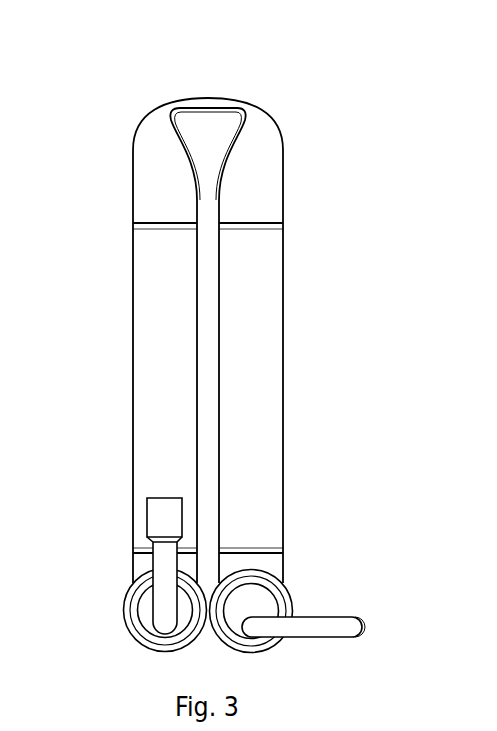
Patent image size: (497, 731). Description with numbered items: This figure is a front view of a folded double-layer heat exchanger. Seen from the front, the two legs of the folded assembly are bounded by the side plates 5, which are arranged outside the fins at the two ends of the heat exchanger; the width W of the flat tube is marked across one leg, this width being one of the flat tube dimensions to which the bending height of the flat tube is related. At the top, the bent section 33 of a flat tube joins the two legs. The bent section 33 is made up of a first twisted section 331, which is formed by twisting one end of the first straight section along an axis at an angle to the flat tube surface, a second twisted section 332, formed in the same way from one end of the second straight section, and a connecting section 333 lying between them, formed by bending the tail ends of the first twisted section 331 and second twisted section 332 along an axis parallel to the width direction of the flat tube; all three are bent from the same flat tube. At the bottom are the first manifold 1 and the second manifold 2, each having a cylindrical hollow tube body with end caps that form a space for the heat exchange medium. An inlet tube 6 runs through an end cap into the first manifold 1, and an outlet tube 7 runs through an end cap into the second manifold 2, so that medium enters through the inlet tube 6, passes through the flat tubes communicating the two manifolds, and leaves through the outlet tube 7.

The bent section 33 is at (232, 296).
The first twisted section 331 is at (158, 167).
The second twisted section 332 is at (258, 158).
The connecting section 333 is at (209, 94).
The side plate 5 is at (150, 358).
The width of the flat tube W is at (195, 420).
The first manifold 1 is at (130, 575).
The inlet tube 6 is at (160, 599).
The second manifold 2 is at (292, 588).
The outlet tube 7 is at (317, 618).